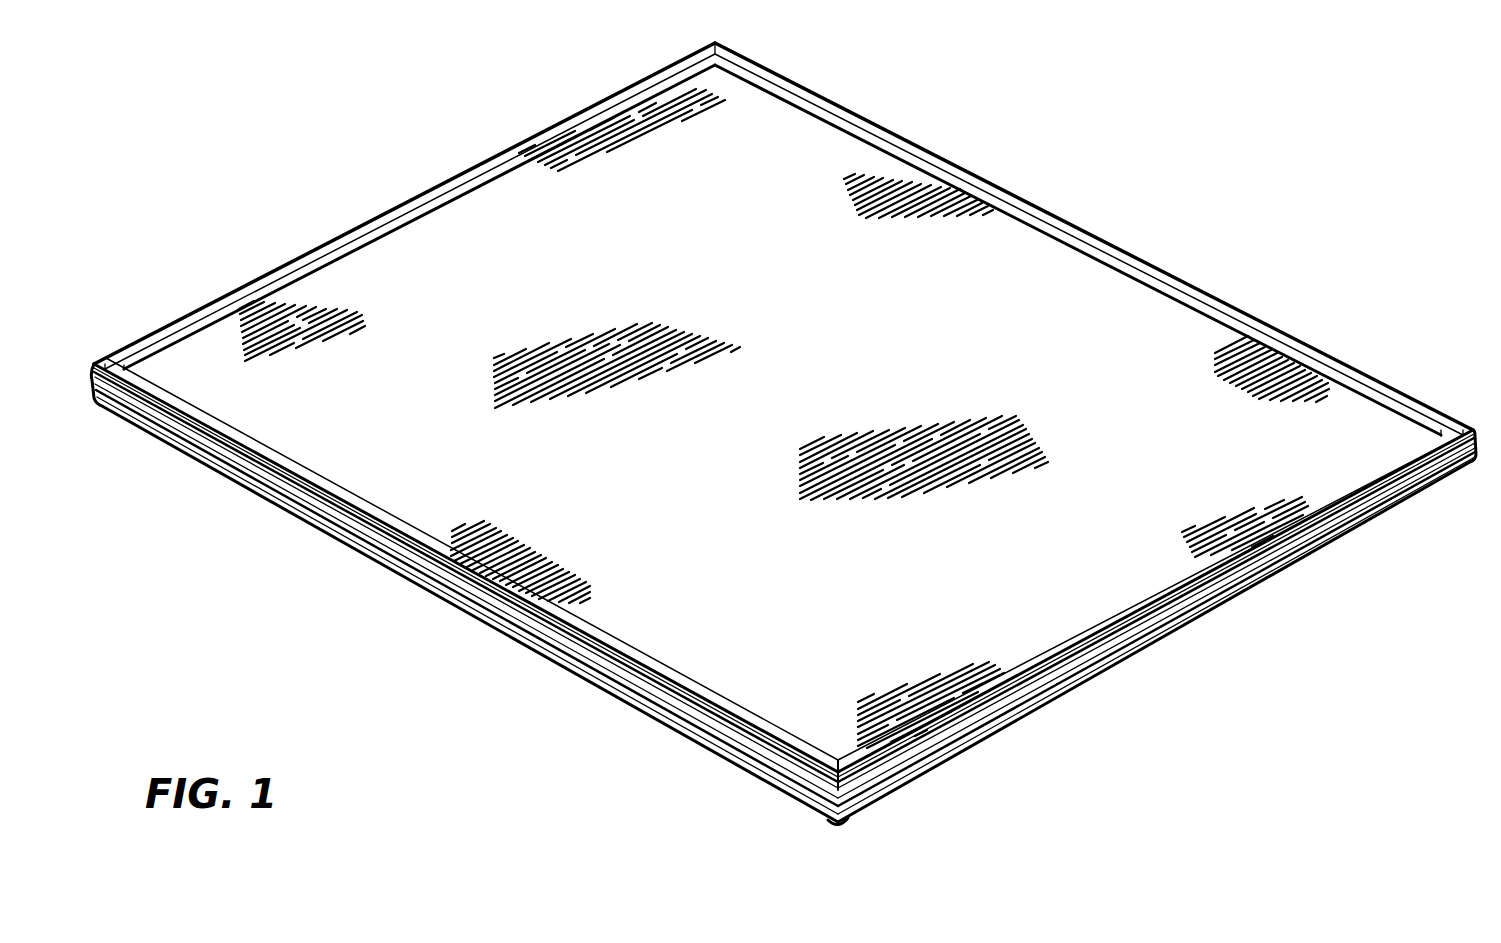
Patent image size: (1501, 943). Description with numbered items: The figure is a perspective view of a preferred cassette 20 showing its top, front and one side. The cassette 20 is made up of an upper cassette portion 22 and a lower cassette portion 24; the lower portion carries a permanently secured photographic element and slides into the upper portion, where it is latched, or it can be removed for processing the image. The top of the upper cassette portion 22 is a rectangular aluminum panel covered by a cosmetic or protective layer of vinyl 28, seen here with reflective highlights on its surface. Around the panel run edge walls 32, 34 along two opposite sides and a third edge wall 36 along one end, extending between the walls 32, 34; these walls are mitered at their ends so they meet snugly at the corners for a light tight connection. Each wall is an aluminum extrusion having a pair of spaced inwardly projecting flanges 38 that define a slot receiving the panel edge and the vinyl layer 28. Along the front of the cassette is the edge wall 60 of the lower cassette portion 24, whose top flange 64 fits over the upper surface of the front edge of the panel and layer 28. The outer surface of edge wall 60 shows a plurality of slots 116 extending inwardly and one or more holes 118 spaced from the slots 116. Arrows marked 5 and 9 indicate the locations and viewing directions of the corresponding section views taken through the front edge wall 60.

The cassette 20 is at (985, 125).
The upper cassette portion 22 is at (1118, 238).
The lower cassette portion 24 is at (343, 554).
The layer of vinyl 28 is at (858, 353).
The edge wall 32 is at (514, 150).
The edge wall 34 is at (1355, 527).
The third edge wall 36 is at (1292, 340).
The inwardly projecting flange 38 is at (747, 70).
The edge wall 60 is at (488, 625).
The flange 64 is at (312, 468).
The slots 116 is at (168, 432).
The holes 118 is at (460, 598).
The section line 9 is at (654, 639).
The section line 5 is at (779, 707).